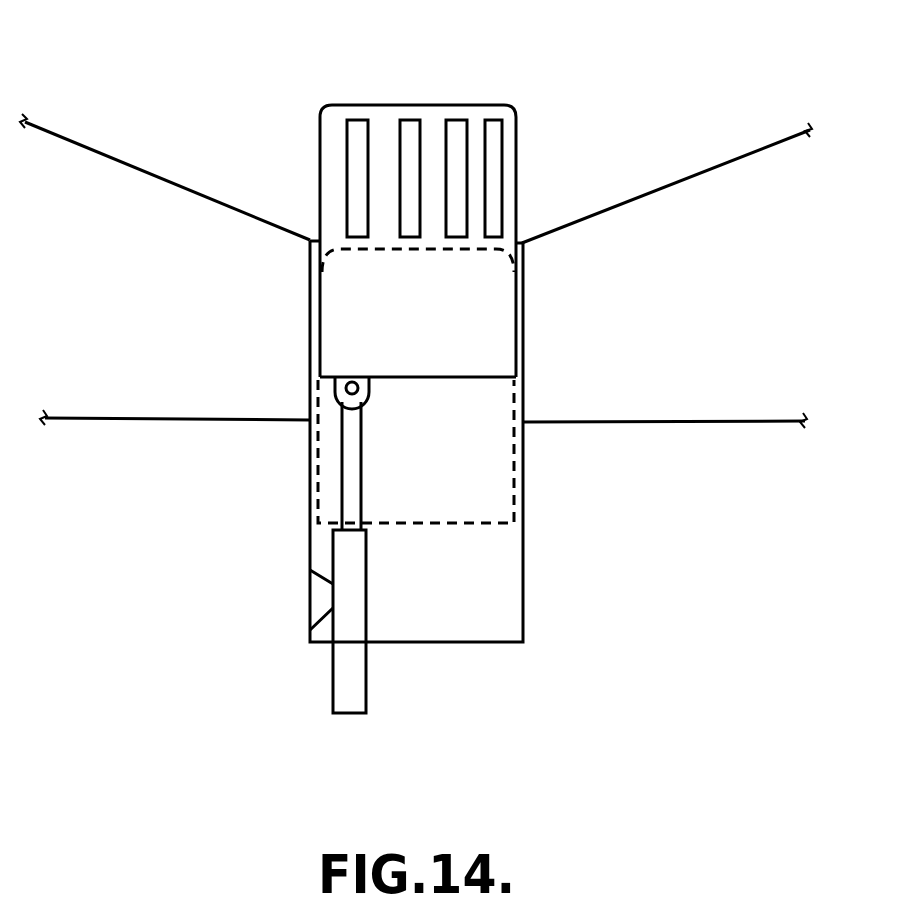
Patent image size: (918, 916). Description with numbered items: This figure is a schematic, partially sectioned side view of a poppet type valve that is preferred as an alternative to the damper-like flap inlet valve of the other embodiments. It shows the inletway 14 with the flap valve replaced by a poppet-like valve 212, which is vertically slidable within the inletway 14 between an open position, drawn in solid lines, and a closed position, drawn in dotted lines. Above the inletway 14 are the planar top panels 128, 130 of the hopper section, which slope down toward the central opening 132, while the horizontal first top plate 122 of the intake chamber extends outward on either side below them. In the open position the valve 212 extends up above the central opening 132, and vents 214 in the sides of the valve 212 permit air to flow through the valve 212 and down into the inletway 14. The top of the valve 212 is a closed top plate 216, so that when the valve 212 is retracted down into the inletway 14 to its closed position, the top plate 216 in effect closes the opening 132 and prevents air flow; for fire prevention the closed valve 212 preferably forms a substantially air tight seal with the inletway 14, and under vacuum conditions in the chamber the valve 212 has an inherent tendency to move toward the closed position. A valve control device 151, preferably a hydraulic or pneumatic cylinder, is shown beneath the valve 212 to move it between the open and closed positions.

The inletway 14 is at (523, 415).
The top plate 216 is at (432, 105).
The vents 214 is at (495, 160).
The poppet-like valve 212 is at (500, 352).
The central opening 132 is at (305, 224).
The top panel 128 is at (183, 190).
The top panel 130 is at (652, 195).
The first top plate 122 is at (160, 418).
The valve control device 151 is at (340, 542).